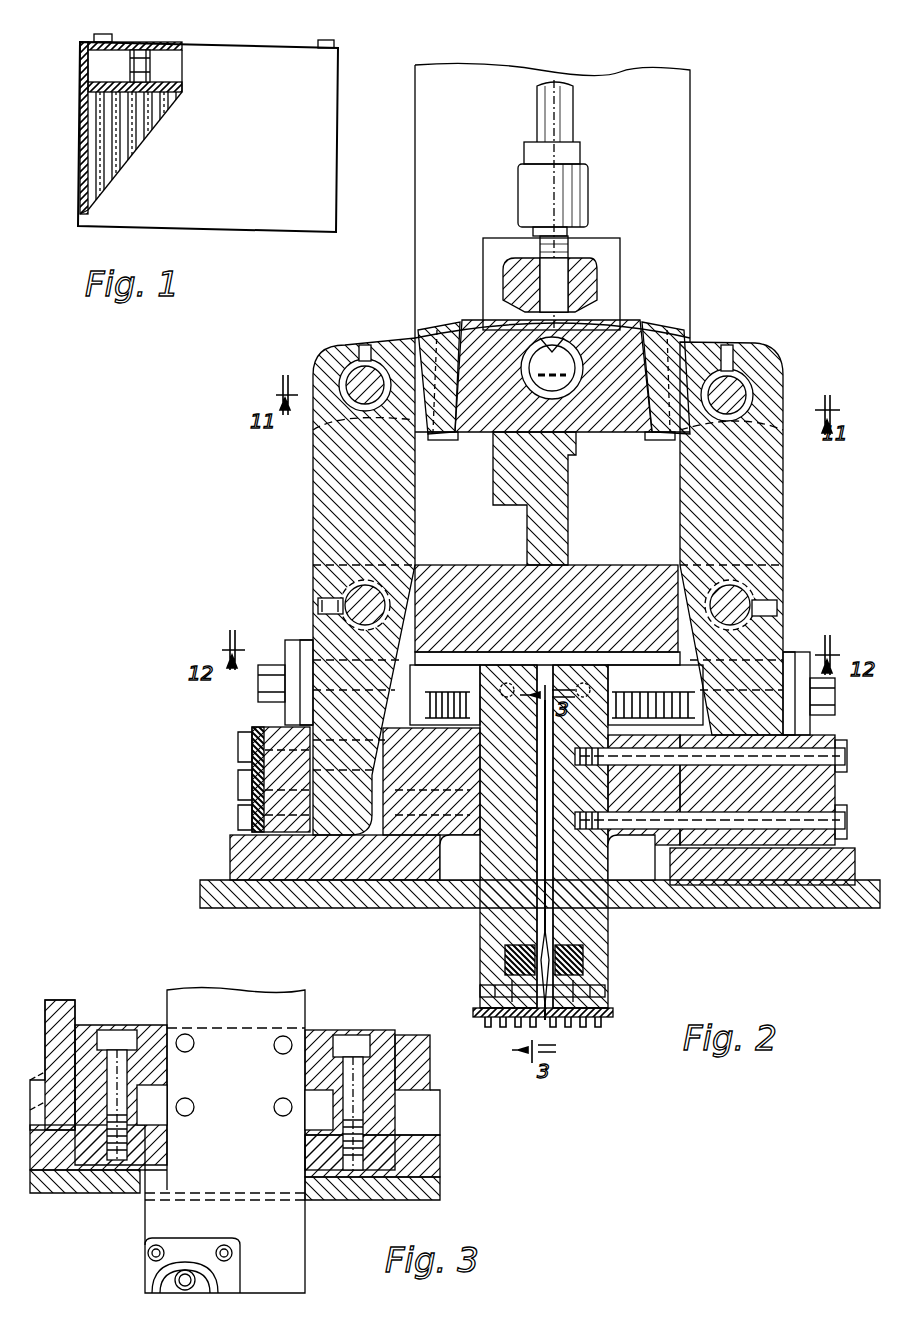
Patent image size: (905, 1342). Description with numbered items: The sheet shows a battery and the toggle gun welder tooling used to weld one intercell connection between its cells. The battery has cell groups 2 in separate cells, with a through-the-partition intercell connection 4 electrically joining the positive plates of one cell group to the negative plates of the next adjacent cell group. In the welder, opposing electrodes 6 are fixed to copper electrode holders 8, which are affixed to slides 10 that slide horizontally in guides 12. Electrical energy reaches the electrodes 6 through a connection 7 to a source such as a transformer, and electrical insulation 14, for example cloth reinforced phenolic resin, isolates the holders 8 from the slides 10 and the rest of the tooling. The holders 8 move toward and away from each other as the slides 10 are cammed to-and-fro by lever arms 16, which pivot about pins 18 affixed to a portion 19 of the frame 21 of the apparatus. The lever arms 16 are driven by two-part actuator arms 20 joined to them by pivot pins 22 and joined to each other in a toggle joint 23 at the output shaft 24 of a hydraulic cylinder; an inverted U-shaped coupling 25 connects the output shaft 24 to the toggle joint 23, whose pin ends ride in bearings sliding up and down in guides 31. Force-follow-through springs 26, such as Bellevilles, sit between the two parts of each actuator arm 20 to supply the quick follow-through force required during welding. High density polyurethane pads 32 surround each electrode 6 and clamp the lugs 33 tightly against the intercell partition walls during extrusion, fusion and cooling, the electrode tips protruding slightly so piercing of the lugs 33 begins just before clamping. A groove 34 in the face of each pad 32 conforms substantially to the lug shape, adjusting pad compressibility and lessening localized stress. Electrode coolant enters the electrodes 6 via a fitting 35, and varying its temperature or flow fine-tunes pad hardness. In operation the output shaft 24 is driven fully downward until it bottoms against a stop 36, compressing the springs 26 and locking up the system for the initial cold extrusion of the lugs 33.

In FIG. 1, the cell groups 2 is at (105, 135).
In FIG. 1, the through-the-partition intercell connection 4 is at (148, 72).
In FIG. 2, the electrodes 6 is at (482, 990).
In FIG. 3, the electrodes 6 is at (184, 1270).
In FIG. 2, the connection 7 is at (292, 680).
In FIG. 2, the electrode holders 8 is at (480, 920).
In FIG. 3, the electrode holders 8 is at (175, 1012).
In FIG. 2, the slides 10 is at (640, 890).
In FIG. 3, the slides 10 is at (148, 1092).
In FIG. 3, the guides 12 is at (335, 1120).
In FIG. 2, the electrical insulation 14 is at (470, 786).
In FIG. 2, the lever arms 16 is at (340, 634).
In FIG. 2, the pins 18 is at (342, 596).
In FIG. 2, the portion of the frame 19 is at (598, 588).
In FIG. 2, the actuator arms 20 is at (445, 328).
In FIG. 2, the frame 21 is at (692, 94).
In FIG. 2, the pivot pins 22 is at (347, 372).
In FIG. 2, the toggle joint 23 is at (520, 338).
In FIG. 2, the output shaft 24 is at (540, 106).
In FIG. 2, the inverted U-shaped coupling 25 is at (583, 262).
In FIG. 2, the force-follow-through springs 26 is at (452, 440).
In FIG. 2, the guides 31 is at (622, 260).
In FIG. 2, the polyurethane pads 32 is at (542, 955).
In FIG. 3, the polyurethane pads 32 is at (210, 1240).
In FIG. 2, the lugs 33 is at (560, 1012).
In FIG. 2, the groove 34 is at (508, 964).
In FIG. 3, the groove 34 is at (217, 1284).
In FIG. 2, the fitting 35 is at (445, 702).
In FIG. 2, the stop 36 is at (497, 502).